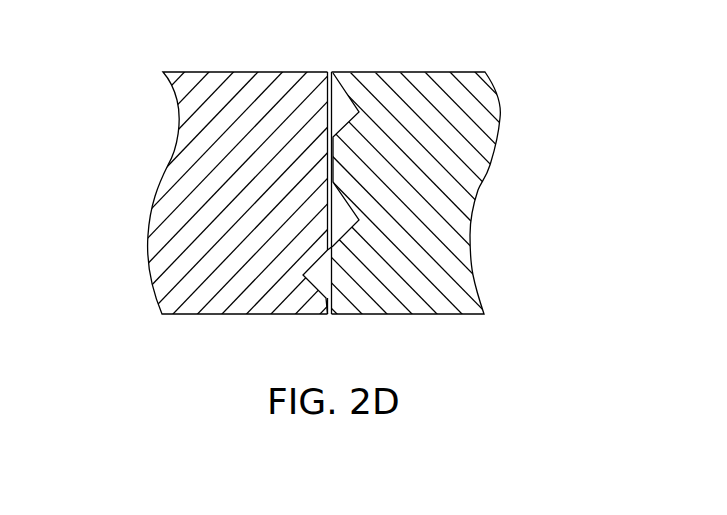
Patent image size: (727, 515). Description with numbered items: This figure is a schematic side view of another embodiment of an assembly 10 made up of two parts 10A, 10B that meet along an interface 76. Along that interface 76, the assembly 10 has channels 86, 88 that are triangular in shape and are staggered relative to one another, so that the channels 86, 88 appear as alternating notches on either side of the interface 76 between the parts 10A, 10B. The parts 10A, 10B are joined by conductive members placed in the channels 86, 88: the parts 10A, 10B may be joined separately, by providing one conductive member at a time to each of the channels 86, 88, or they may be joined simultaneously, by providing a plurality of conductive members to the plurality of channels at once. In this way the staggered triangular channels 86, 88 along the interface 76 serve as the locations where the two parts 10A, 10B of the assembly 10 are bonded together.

The assembly 10 is at (125, 39).
The part 10A is at (148, 243).
The part 10B is at (500, 132).
The interface 76 is at (337, 322).
The channel 86 is at (338, 105).
The channel 88 is at (318, 166).